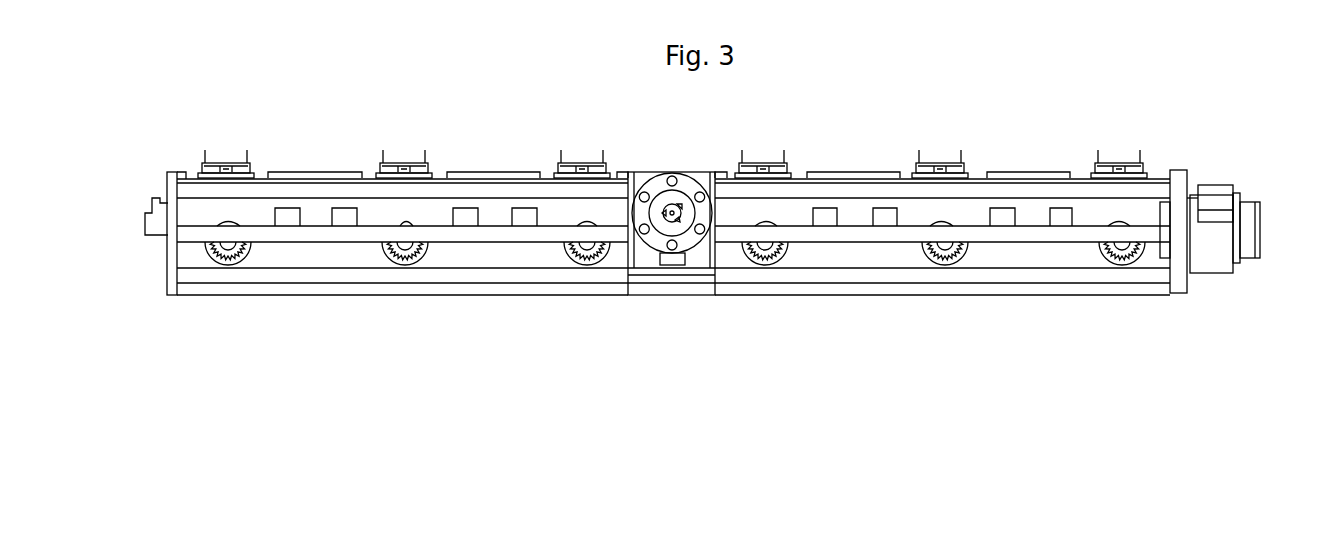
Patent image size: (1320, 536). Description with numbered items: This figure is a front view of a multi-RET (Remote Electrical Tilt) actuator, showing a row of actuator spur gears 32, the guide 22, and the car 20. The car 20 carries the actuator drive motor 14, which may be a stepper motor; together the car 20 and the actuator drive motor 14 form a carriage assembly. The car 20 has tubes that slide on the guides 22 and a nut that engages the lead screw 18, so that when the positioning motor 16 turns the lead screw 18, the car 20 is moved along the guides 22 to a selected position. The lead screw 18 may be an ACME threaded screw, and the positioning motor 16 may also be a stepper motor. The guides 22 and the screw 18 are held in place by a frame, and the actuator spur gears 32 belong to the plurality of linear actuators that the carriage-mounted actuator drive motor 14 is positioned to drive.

The actuator drive motor 14 is at (690, 233).
The positioning motor 16 is at (1250, 247).
The lead screw 18 is at (1047, 228).
The car 20 is at (647, 280).
The guides 22 is at (295, 280).
The actuator spur gears 32 is at (418, 262).